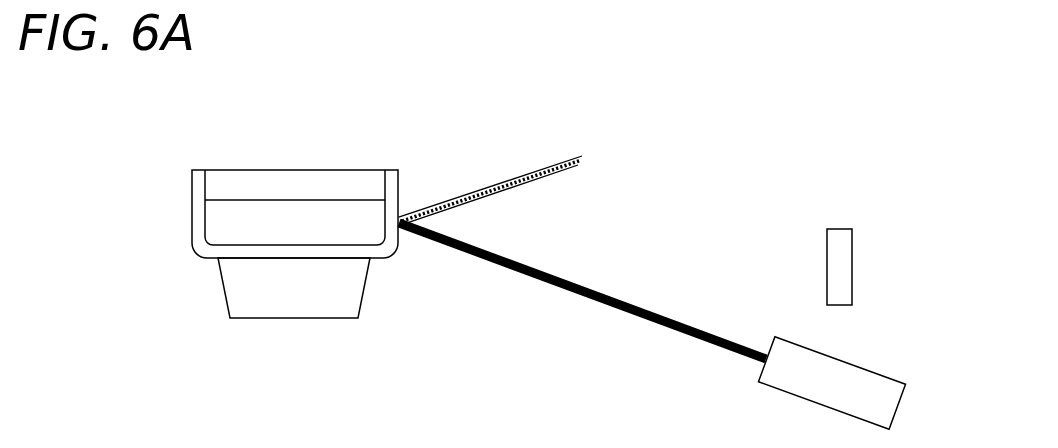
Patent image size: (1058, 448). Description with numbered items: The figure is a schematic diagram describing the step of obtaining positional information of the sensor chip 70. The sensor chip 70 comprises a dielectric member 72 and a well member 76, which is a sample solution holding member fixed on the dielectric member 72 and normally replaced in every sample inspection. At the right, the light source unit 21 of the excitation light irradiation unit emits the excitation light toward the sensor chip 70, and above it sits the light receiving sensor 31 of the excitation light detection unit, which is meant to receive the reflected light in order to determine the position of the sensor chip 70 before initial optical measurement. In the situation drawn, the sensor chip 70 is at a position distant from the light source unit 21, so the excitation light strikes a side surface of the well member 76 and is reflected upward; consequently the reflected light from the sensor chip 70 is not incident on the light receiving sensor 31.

The sensor chip 70 is at (274, 212).
The well member 76 is at (197, 213).
The dielectric member 72 is at (345, 295).
The light source unit 21 is at (845, 377).
The light receiving sensor 31 is at (840, 260).